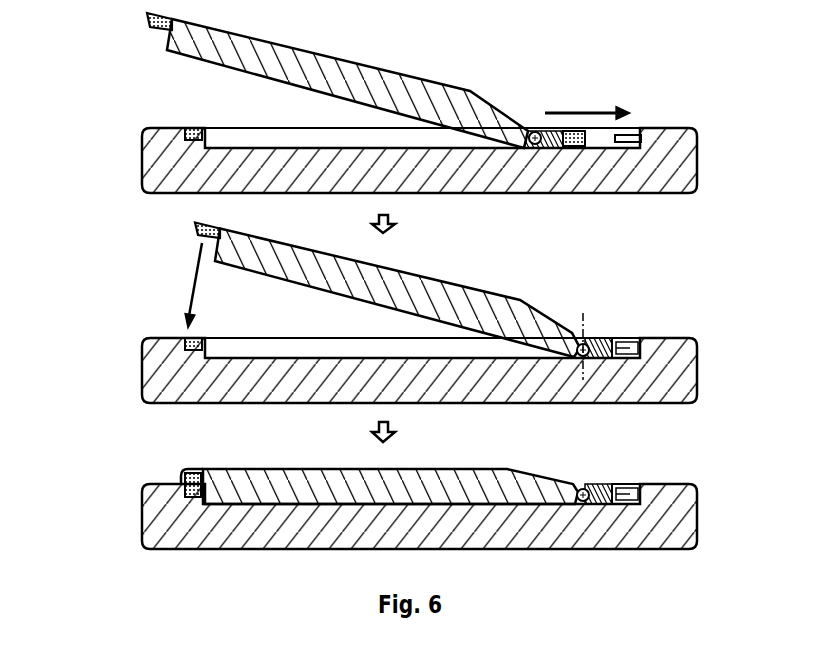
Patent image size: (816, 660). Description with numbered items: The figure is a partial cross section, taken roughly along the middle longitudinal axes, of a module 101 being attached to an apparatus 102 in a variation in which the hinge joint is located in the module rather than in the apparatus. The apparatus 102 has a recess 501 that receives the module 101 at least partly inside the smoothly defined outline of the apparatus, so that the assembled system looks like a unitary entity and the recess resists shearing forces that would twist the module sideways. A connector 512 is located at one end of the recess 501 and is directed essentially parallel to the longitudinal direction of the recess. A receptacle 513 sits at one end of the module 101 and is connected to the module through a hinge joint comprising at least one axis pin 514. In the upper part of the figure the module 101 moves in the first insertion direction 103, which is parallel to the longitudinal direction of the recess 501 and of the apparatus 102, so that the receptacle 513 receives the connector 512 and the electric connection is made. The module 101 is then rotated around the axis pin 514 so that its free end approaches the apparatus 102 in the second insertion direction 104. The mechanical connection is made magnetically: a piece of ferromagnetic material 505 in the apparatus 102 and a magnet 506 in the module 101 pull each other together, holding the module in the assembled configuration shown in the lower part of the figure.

The module 101 is at (325, 52).
The apparatus 102 is at (146, 187).
The first insertion direction 103 is at (584, 111).
The second insertion direction 104 is at (188, 286).
The recess 501 is at (262, 148).
The piece of ferromagnetic material 505 is at (197, 343).
The magnet 506 is at (196, 231).
The connector 512 is at (630, 135).
The receptacle 513 is at (573, 132).
The axis pin 514 is at (530, 128).